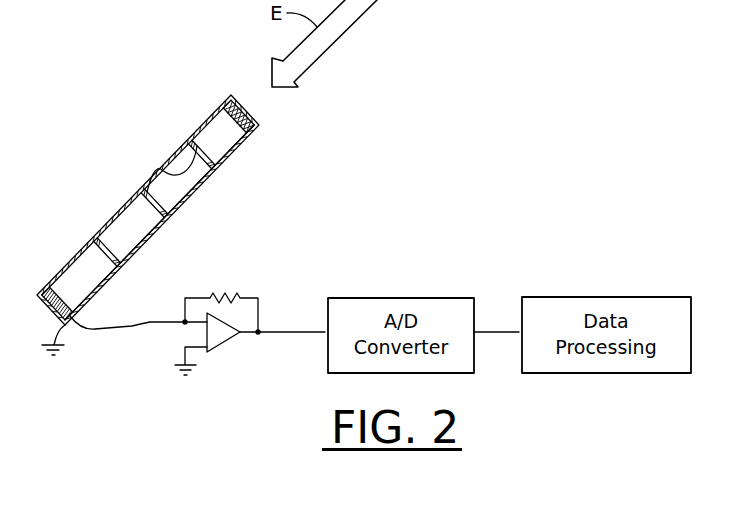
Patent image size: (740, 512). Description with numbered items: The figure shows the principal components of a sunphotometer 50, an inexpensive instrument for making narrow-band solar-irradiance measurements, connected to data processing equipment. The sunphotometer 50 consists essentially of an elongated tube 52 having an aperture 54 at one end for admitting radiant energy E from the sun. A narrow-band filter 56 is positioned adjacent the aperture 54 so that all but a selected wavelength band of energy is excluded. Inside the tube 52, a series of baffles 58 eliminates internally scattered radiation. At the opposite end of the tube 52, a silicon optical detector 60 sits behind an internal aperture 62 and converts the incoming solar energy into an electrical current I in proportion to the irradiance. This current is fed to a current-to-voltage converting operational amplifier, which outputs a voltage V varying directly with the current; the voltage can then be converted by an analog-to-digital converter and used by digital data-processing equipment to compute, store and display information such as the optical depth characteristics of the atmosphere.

The sunphotometer 50 is at (172, 208).
The elongated tube 52 is at (154, 210).
The aperture 54 is at (204, 216).
The narrow-band filter 56 is at (228, 122).
The baffles 58 is at (180, 137).
The silicon optical detector 60 is at (53, 282).
The internal aperture 62 is at (70, 290).